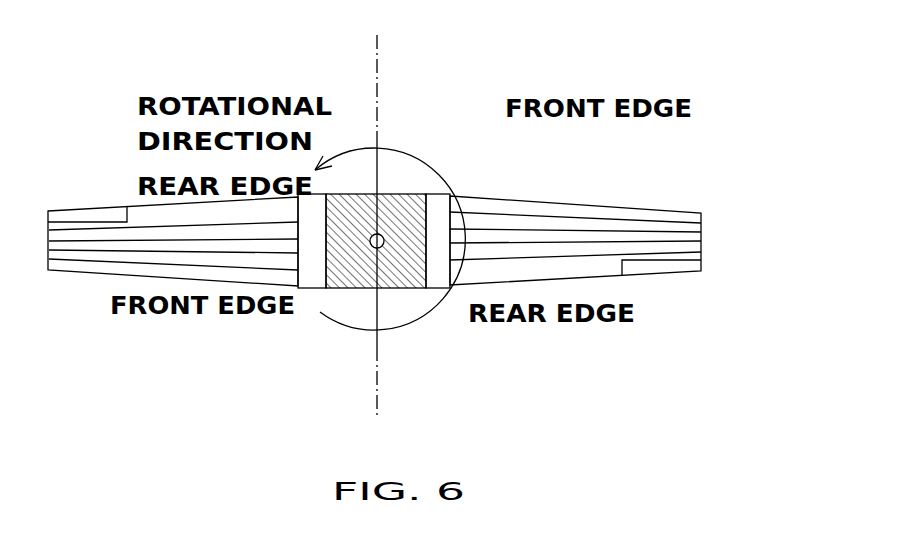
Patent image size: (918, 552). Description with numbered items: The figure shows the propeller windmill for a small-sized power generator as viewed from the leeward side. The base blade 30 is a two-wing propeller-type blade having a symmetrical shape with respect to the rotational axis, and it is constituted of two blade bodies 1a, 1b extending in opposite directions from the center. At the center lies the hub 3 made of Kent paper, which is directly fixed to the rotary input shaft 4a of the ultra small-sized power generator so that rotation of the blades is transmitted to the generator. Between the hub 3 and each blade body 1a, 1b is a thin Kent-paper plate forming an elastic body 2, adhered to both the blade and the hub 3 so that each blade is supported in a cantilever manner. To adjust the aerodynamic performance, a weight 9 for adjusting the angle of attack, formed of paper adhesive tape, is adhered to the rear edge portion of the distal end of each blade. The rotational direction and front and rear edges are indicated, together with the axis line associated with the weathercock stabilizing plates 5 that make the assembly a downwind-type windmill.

The blade body 1a is at (102, 245).
The blade body 1b is at (610, 220).
The elastic body 2 is at (313, 275).
The hub 3 is at (430, 197).
The rotary input shaft 4a is at (381, 235).
The weathercock stabilizing plate 5 is at (377, 140).
The weight for adjusting an angle of attack 9 is at (84, 217).
The base blade 30 is at (676, 186).